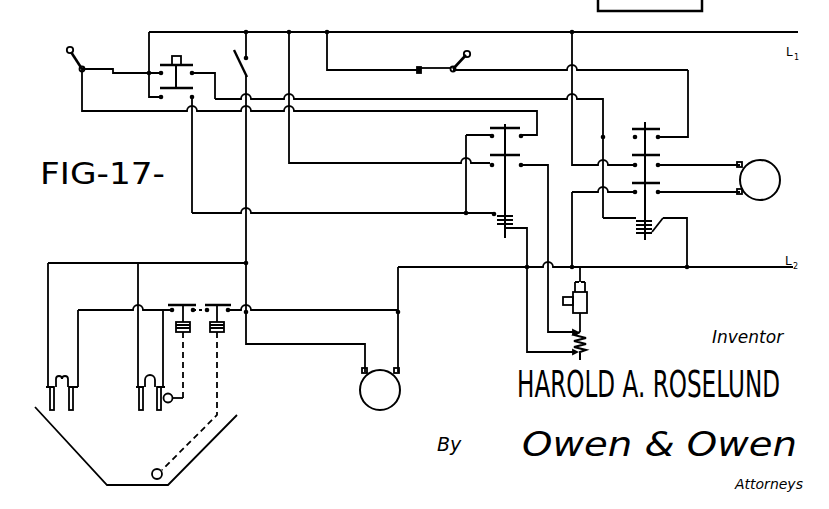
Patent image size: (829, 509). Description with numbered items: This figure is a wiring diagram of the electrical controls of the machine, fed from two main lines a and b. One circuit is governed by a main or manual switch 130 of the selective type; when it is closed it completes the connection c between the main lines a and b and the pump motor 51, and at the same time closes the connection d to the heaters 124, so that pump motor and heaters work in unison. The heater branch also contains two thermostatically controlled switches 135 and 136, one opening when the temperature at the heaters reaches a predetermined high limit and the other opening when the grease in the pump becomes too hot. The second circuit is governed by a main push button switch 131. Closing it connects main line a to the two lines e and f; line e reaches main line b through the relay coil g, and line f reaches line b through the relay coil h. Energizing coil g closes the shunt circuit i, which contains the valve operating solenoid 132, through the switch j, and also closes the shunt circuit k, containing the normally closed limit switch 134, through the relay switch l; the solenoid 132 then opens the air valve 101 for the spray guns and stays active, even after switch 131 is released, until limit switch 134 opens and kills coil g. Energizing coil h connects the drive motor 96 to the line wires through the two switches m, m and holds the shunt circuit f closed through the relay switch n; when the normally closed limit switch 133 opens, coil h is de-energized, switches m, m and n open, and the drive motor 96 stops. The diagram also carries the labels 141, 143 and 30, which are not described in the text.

The manual switch 141 is at (78, 70).
The limit switch 134 is at (97, 52).
The main push button switch 131 is at (176, 57).
The main or manual switch 130 is at (254, 66).
The limit switch 133 is at (439, 63).
The manual switch 143 is at (472, 60).
The drive motor 96 is at (772, 193).
The air valve 101 is at (588, 305).
The solenoid 132 is at (590, 346).
The pump motor 51 is at (360, 395).
The heaters 124 is at (140, 408).
The tank 30 is at (199, 452).
The thermostatically controlled switch 135 is at (189, 305).
The thermostatically controlled switch 136 is at (232, 292).
The main line a is at (733, 38).
The main line b is at (730, 275).
The connection c is at (246, 186).
The connection d is at (205, 260).
The line e is at (192, 146).
The line f is at (339, 98).
The relay coil g is at (497, 228).
The relay coil h is at (640, 235).
The shunt circuit i is at (376, 166).
The switch j is at (526, 154).
The shunt circuit k is at (370, 118).
The relay switch l is at (486, 126).
The switches m is at (680, 185).
The relay switch n is at (653, 129).